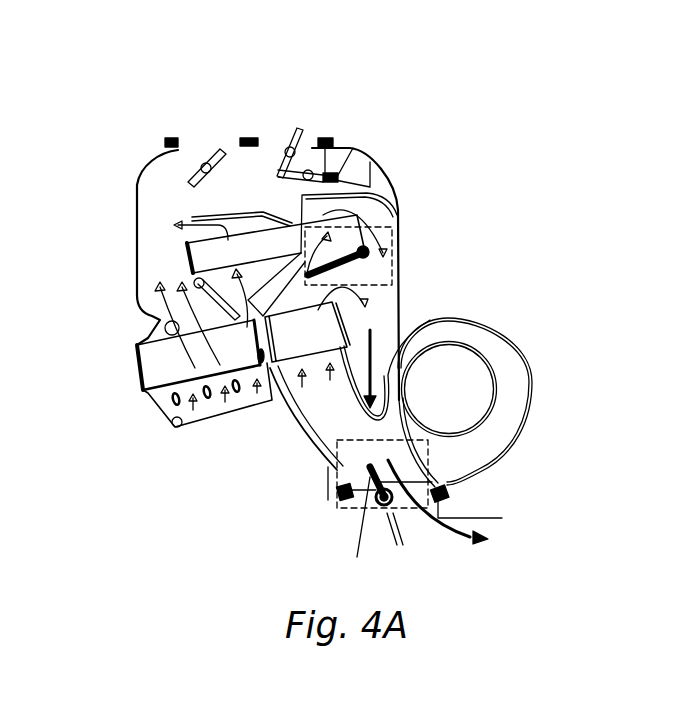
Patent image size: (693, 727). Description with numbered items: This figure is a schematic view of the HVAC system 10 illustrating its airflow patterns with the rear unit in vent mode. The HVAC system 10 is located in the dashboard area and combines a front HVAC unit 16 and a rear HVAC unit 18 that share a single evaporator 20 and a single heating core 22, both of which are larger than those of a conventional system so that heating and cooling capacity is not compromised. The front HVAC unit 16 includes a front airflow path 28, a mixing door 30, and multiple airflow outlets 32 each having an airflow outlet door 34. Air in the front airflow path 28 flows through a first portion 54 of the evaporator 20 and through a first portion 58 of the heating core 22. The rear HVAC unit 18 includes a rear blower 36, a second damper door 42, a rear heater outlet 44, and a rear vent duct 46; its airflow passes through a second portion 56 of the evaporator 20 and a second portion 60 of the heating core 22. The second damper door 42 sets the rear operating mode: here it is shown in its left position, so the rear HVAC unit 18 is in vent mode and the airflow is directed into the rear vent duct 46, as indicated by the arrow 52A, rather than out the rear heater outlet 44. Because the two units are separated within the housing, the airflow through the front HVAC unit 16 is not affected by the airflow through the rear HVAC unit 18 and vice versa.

The HVAC system 10 is at (107, 152).
The front HVAC unit 16 is at (120, 222).
The rear HVAC unit 18 is at (422, 277).
The evaporator 20 is at (140, 390).
The heating core 22 is at (353, 217).
The front airflow path 28 is at (167, 270).
The mixing door 30 is at (180, 302).
The airflow outlets 32 is at (192, 148).
The airflow outlet door 34 is at (213, 150).
The rear blower 36 is at (498, 400).
The second damper door 42 is at (327, 463).
The rear heater outlet 44 is at (372, 542).
The rear vent duct 46 is at (480, 528).
The arrow 52A is at (460, 540).
The first portion of the evaporator 54 is at (155, 363).
The second portion of the evaporator 56 is at (333, 340).
The first portion of the heating core 58 is at (200, 257).
The second portion of the heating core 60 is at (352, 237).